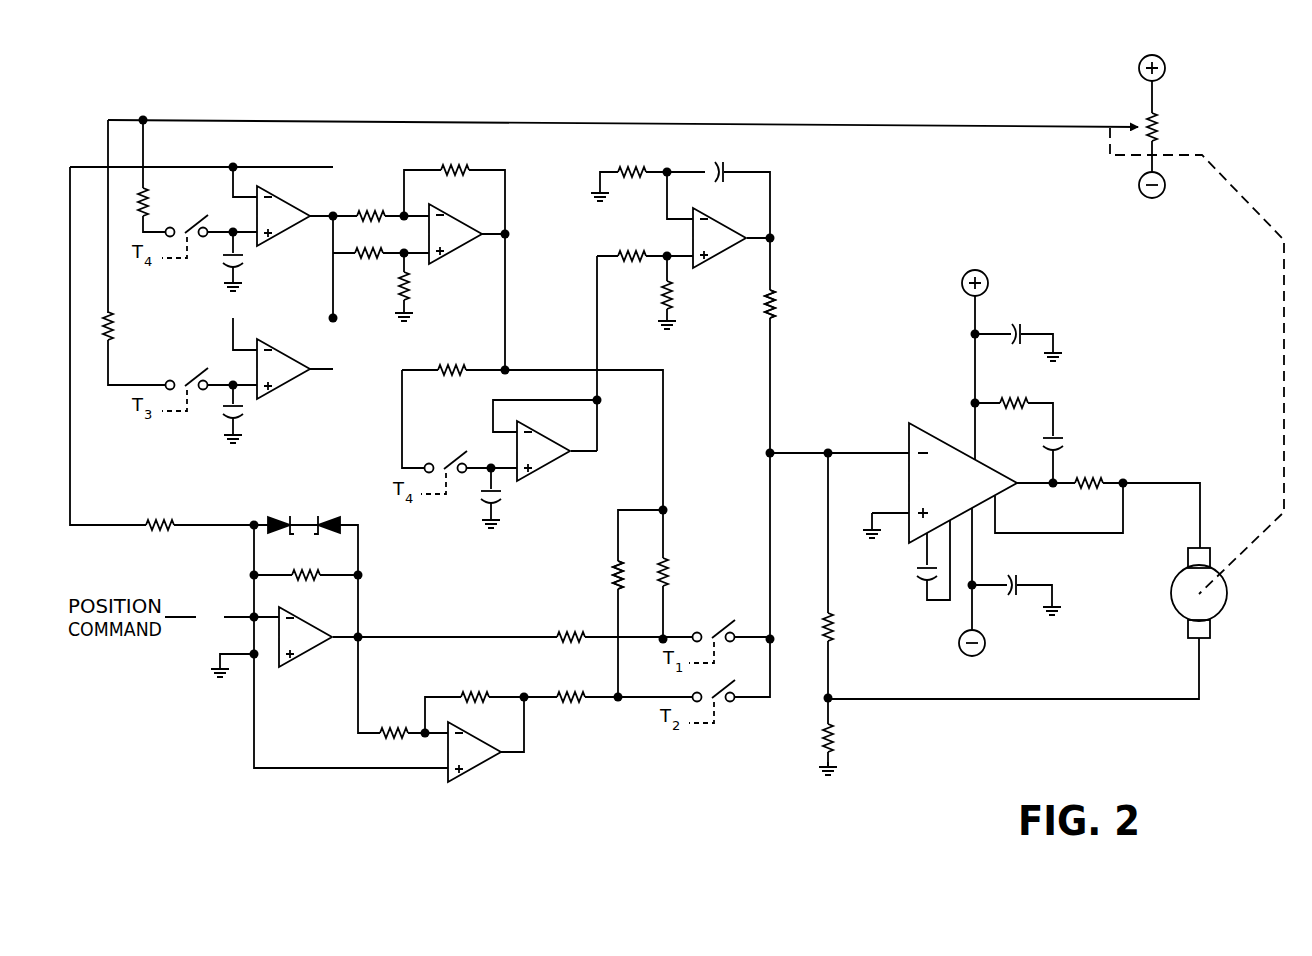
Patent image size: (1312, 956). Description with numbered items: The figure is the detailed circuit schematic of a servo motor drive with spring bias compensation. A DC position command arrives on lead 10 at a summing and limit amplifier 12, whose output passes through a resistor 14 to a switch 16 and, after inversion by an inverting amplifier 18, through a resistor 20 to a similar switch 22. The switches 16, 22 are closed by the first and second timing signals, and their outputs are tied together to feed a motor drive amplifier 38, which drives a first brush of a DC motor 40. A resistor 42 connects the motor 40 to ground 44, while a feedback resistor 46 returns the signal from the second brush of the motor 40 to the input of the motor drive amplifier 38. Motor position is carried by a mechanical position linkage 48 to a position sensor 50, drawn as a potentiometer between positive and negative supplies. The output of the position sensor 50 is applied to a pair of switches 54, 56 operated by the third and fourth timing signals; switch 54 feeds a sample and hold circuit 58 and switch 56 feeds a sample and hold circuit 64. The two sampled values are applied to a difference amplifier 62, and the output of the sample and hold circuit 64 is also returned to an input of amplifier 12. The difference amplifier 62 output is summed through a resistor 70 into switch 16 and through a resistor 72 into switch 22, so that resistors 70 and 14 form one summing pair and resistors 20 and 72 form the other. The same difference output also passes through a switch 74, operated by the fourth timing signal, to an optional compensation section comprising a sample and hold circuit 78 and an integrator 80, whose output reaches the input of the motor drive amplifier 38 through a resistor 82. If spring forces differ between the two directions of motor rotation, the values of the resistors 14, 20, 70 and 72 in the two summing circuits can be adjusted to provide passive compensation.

The lead 10 is at (180, 618).
The summing and limit amplifier 12 is at (306, 666).
The resistor 14 is at (570, 630).
The switch 16 is at (712, 620).
The inverting amplifier 18 is at (486, 771).
The resistor 20 is at (571, 691).
The switch 22 is at (725, 718).
The motor drive amplifier 38 is at (939, 417).
The DC motor 40 is at (1227, 612).
The resistor 42 is at (836, 735).
The ground 44 is at (822, 776).
The feedback resistor 46 is at (835, 630).
The mechanical position linkage 48 is at (1279, 380).
The position sensor 50 is at (1119, 176).
The switch 54 is at (181, 367).
The switch 56 is at (182, 215).
The sample and hold circuit 58 is at (294, 390).
The difference amplifier 62 is at (456, 262).
The sample and hold circuit 64 is at (291, 240).
The resistor 70 is at (672, 568).
The resistor 72 is at (610, 575).
The switch 74 is at (446, 449).
The sample and hold circuit 78 is at (546, 474).
The integrator 80 is at (720, 266).
The resistor 82 is at (784, 304).